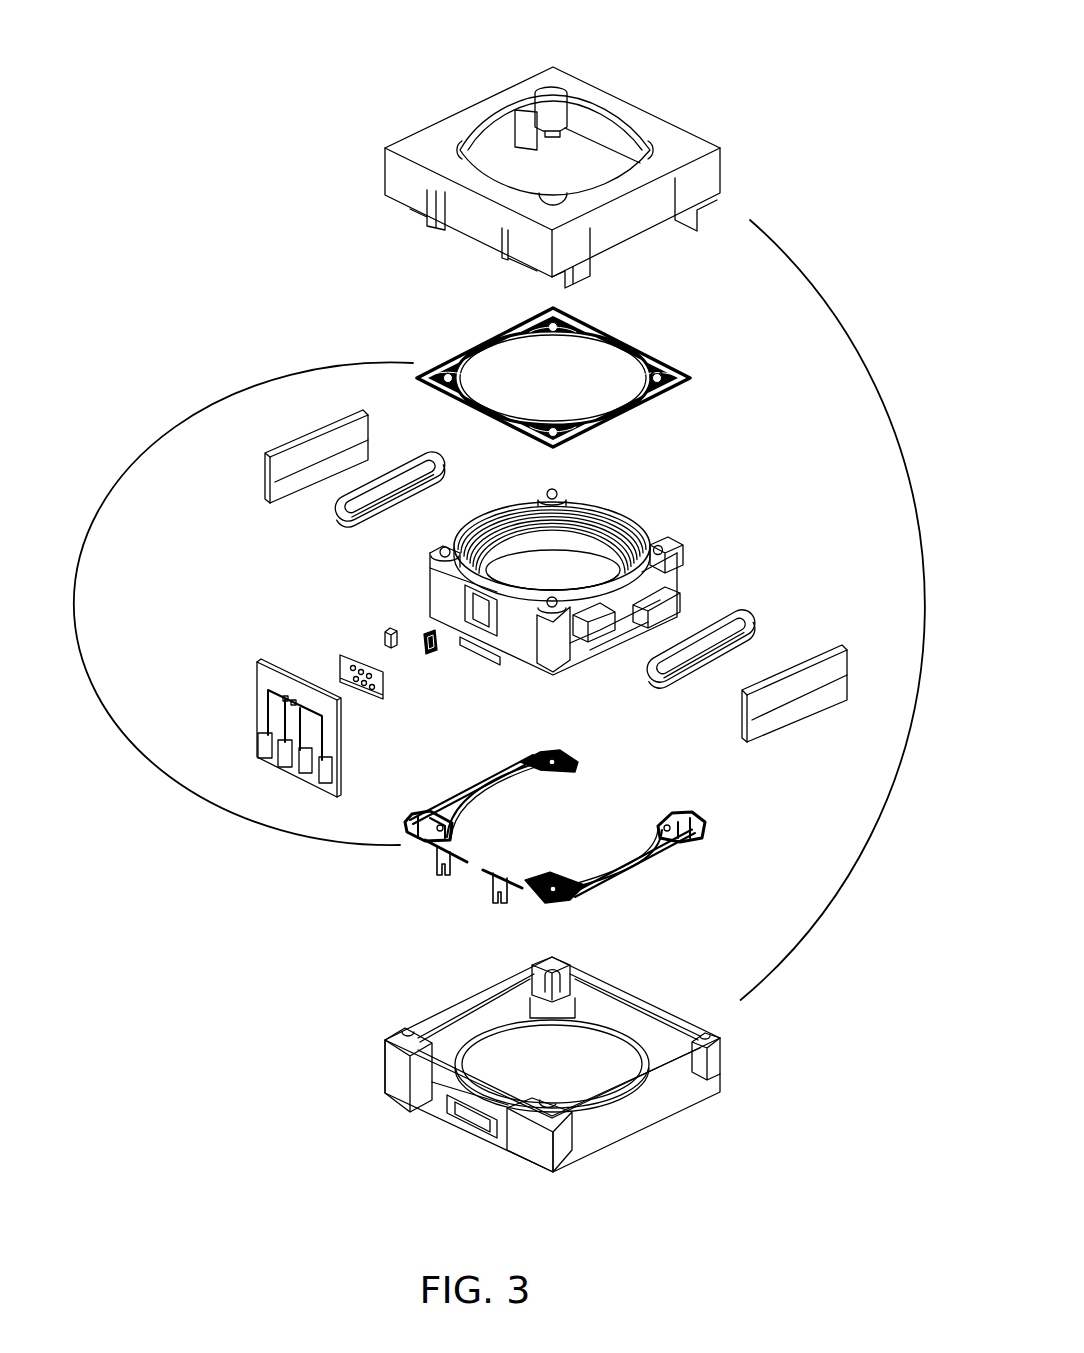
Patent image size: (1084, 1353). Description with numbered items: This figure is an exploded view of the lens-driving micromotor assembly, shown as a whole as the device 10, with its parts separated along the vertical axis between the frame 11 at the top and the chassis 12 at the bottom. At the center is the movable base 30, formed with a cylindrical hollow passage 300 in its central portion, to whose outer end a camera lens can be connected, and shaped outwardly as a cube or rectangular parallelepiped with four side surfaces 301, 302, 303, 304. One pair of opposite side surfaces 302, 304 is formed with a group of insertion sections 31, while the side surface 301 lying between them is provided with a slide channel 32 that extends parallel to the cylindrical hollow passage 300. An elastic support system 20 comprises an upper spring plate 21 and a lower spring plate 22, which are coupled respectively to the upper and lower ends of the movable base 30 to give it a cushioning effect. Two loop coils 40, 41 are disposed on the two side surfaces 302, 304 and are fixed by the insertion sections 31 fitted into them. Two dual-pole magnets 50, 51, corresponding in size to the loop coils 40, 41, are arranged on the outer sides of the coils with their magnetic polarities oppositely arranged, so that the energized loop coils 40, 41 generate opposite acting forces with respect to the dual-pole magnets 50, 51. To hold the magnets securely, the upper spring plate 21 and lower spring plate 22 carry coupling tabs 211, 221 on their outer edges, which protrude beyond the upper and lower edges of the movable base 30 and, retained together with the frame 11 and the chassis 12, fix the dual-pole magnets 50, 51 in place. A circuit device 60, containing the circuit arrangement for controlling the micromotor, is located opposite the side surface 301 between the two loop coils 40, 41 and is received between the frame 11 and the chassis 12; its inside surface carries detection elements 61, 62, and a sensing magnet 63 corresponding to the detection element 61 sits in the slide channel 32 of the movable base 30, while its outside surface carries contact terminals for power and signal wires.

The lens driving device 10 is at (852, 610).
The frame 11 is at (630, 88).
The chassis 12 is at (690, 1126).
The elastic support system 20 is at (228, 603).
The upper spring plate 21 is at (438, 335).
The coupling tab 211 is at (633, 417).
The lower spring plate 22 is at (513, 846).
The coupling tab 221 is at (628, 872).
The movable base 30 is at (597, 579).
The cylindrical hollow passage 300 is at (584, 578).
The side surface 301 is at (512, 637).
The side surface 302 is at (623, 615).
The side surface 303 is at (636, 524).
The side surface 304 is at (488, 508).
The insertion sections 31 is at (583, 633).
The slide channel 32 is at (483, 620).
The loop coil 40 is at (756, 616).
The loop coil 41 is at (329, 519).
The dual-pole magnet 50 is at (800, 730).
The dual-pole magnet 51 is at (270, 458).
The circuit device 60 is at (257, 689).
The detection element 61 is at (341, 659).
The detection element 62 is at (383, 632).
The sensing magnet 63 is at (419, 626).